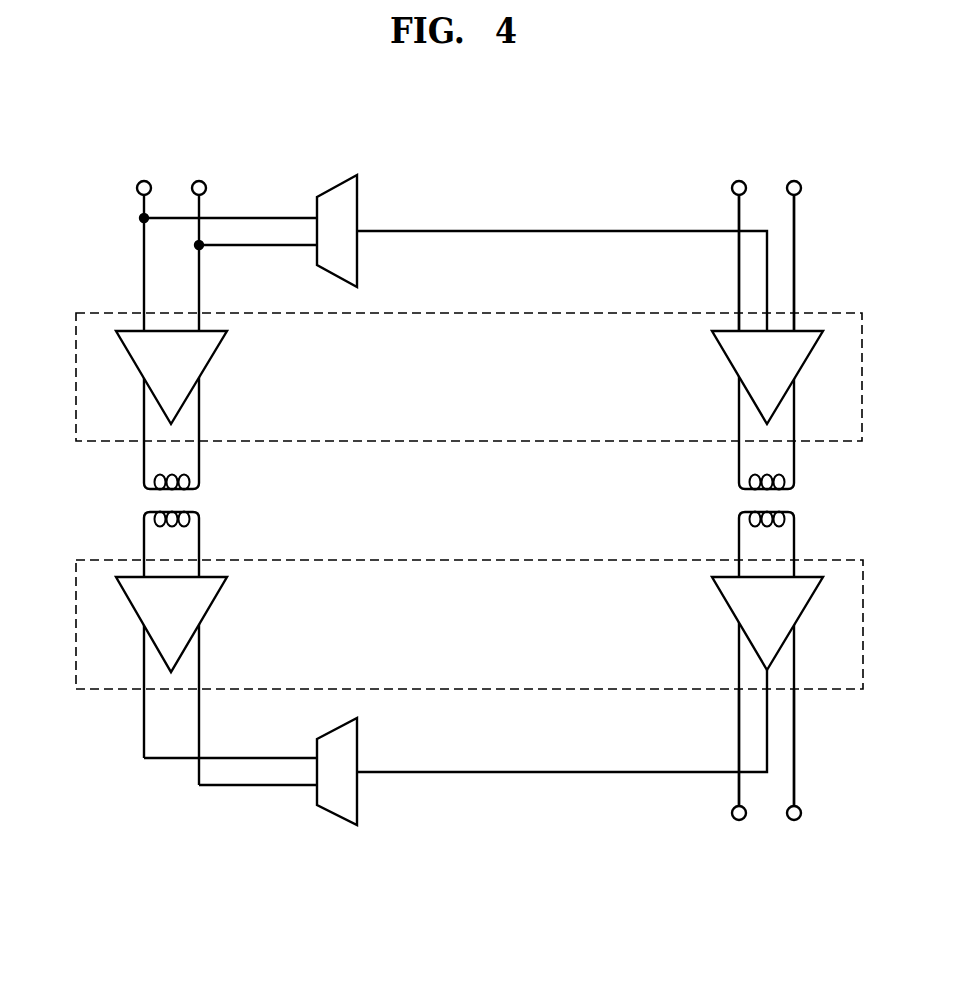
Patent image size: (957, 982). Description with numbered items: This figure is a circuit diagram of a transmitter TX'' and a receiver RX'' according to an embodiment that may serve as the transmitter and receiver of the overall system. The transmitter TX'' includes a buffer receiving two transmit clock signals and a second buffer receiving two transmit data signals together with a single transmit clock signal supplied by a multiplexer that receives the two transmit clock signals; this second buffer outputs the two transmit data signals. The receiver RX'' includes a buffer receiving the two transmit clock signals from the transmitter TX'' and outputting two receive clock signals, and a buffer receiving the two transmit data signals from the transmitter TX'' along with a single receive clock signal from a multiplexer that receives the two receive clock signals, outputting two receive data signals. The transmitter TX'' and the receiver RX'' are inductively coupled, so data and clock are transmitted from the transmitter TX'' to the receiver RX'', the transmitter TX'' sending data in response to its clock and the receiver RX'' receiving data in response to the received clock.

The transmitter TX'' is at (443, 342).
The receiver RX'' is at (443, 659).